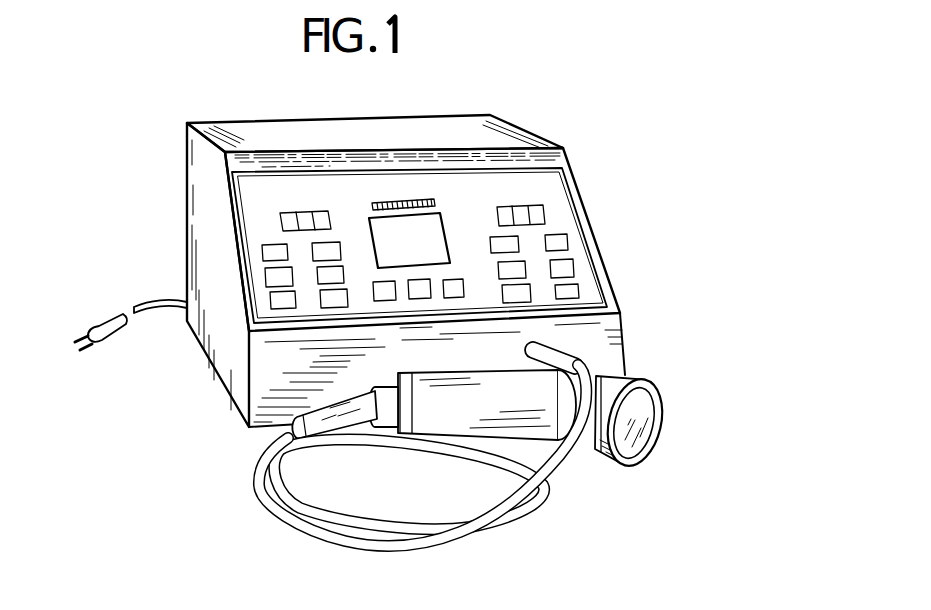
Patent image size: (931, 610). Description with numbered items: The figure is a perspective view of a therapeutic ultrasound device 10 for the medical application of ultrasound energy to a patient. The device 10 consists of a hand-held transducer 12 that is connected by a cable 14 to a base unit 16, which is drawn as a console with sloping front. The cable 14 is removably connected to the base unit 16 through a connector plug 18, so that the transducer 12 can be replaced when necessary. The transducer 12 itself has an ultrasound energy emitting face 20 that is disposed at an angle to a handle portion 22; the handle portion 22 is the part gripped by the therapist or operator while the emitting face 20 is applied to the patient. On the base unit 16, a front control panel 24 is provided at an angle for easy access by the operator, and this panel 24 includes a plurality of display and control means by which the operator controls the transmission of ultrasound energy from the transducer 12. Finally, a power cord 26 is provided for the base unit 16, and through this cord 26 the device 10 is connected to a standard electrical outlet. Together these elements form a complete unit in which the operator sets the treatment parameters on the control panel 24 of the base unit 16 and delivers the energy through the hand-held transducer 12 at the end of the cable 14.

The therapeutic ultrasound device 10 is at (574, 131).
The hand-held transducer 12 is at (656, 386).
The cable 14 is at (552, 500).
The base unit 16 is at (231, 123).
The connector plug 18 is at (560, 356).
The ultrasound energy emitting face 20 is at (637, 428).
The handle portion 22 is at (478, 392).
The front control panel 24 is at (560, 199).
The power cord 26 is at (108, 317).